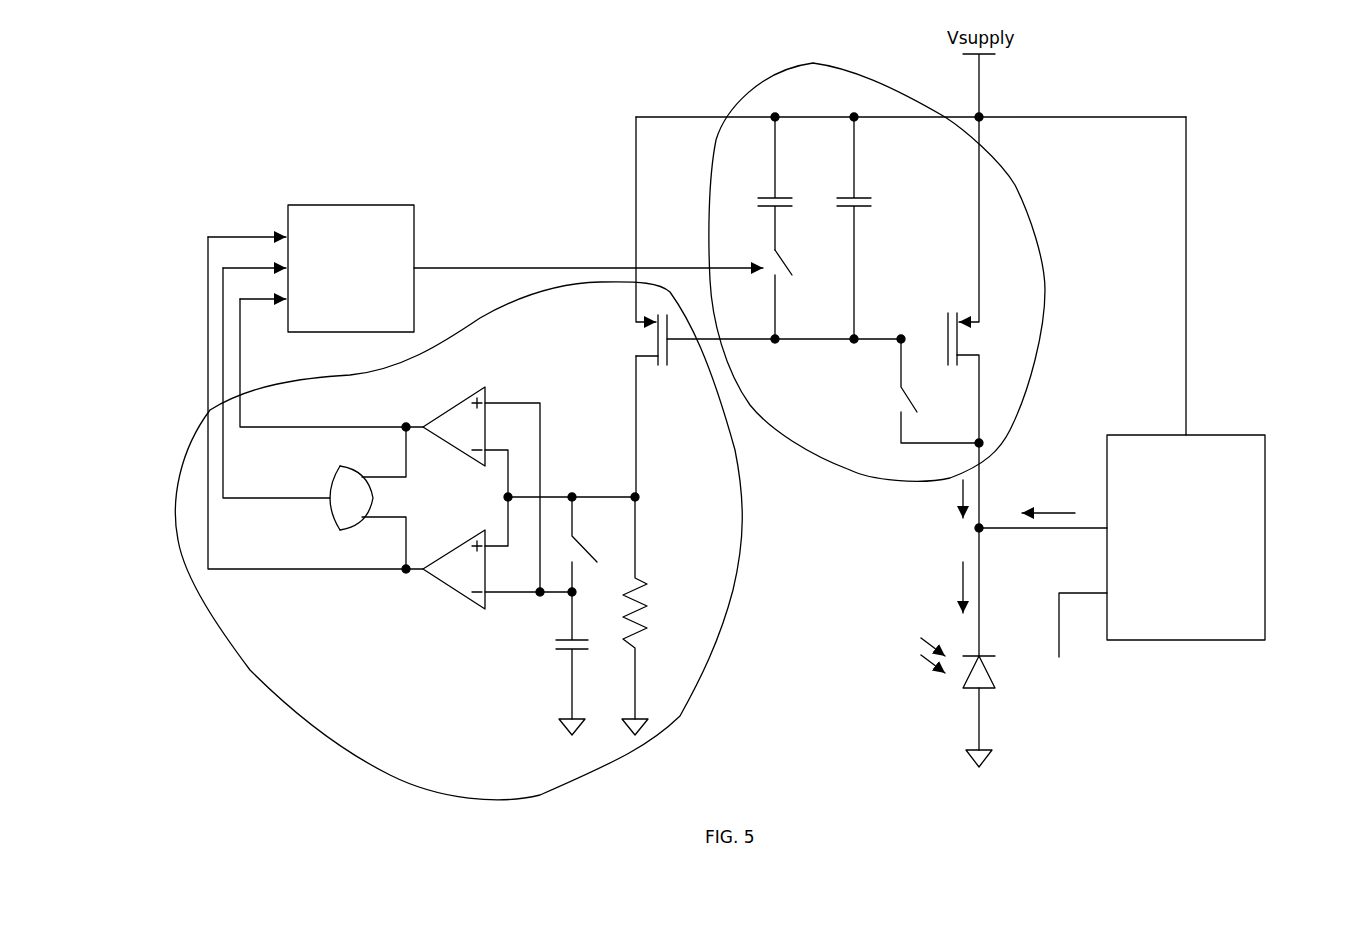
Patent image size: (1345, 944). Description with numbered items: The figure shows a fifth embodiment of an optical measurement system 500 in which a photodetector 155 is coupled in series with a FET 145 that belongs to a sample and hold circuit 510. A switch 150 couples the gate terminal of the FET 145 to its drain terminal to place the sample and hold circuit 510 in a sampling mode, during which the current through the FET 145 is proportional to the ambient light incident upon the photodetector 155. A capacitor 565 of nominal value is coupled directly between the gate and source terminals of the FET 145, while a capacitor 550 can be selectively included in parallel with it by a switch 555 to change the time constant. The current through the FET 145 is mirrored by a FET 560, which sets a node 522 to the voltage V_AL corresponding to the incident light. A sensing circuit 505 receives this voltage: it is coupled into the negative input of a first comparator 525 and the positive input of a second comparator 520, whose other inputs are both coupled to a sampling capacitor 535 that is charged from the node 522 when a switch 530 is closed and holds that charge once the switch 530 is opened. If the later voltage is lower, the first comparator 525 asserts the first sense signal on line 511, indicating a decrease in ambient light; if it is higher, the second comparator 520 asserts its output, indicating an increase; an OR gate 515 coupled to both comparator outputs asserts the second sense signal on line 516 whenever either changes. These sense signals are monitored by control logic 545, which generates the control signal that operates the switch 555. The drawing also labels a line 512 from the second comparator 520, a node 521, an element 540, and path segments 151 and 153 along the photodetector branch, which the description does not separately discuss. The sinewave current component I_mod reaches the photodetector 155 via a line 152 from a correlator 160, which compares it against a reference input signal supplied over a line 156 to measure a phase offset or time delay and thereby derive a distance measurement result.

The optical measurement system 500 is at (1288, 196).
The sensing circuit 505 is at (742, 562).
The sample and hold circuit 510 is at (800, 63).
The line 511 is at (384, 424).
The AL_Up signal line 512 is at (370, 572).
The OR gate 515 is at (356, 462).
The line 516 is at (300, 500).
The second comparator 520 is at (446, 600).
The comparator reference node 521 is at (549, 496).
The node 522 is at (652, 496).
The first comparator 525 is at (452, 401).
The switch 530 is at (602, 550).
The sampling capacitor 535 is at (542, 648).
The load resistor 540 is at (662, 611).
The control logic 545 is at (485, 268).
The capacitor 550 is at (750, 201).
The switch 555 is at (800, 262).
The FET 560 is at (610, 332).
The capacitor 565 is at (830, 201).
The FET 145 is at (1000, 337).
The sampling switch 150 is at (878, 404).
The ambient current branch 151 is at (982, 510).
The line 152 is at (1010, 530).
The photodiode current branch 153 is at (982, 568).
The photodetector 155 is at (1009, 678).
The line 156 is at (1058, 632).
The correlator 160 is at (1218, 434).